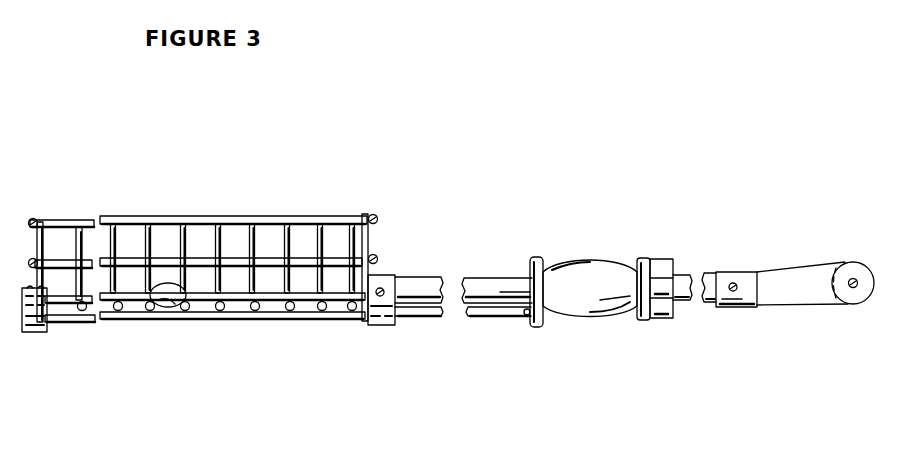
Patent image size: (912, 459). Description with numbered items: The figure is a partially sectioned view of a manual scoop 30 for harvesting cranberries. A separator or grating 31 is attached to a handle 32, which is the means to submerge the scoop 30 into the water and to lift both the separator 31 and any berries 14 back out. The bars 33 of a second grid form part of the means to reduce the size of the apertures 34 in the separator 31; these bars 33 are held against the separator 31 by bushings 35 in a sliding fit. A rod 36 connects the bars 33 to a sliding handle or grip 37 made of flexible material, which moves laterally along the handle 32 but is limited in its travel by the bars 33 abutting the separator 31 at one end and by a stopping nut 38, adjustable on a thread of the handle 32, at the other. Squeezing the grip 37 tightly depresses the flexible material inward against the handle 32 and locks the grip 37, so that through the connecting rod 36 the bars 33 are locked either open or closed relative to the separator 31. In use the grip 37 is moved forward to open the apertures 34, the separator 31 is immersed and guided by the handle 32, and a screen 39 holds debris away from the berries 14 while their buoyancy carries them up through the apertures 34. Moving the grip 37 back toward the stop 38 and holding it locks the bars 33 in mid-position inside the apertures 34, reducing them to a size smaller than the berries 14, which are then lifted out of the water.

The berries 14 is at (160, 310).
The manual scoop 30 is at (400, 273).
The separator 31 is at (128, 321).
The handle 32 is at (423, 290).
The bars 33 is at (290, 314).
The apertures 34 is at (202, 320).
The bushings 35 is at (36, 333).
The rod 36 is at (481, 313).
The grip 37 is at (579, 265).
The stopping nut 38 is at (665, 308).
The screen 39 is at (182, 250).